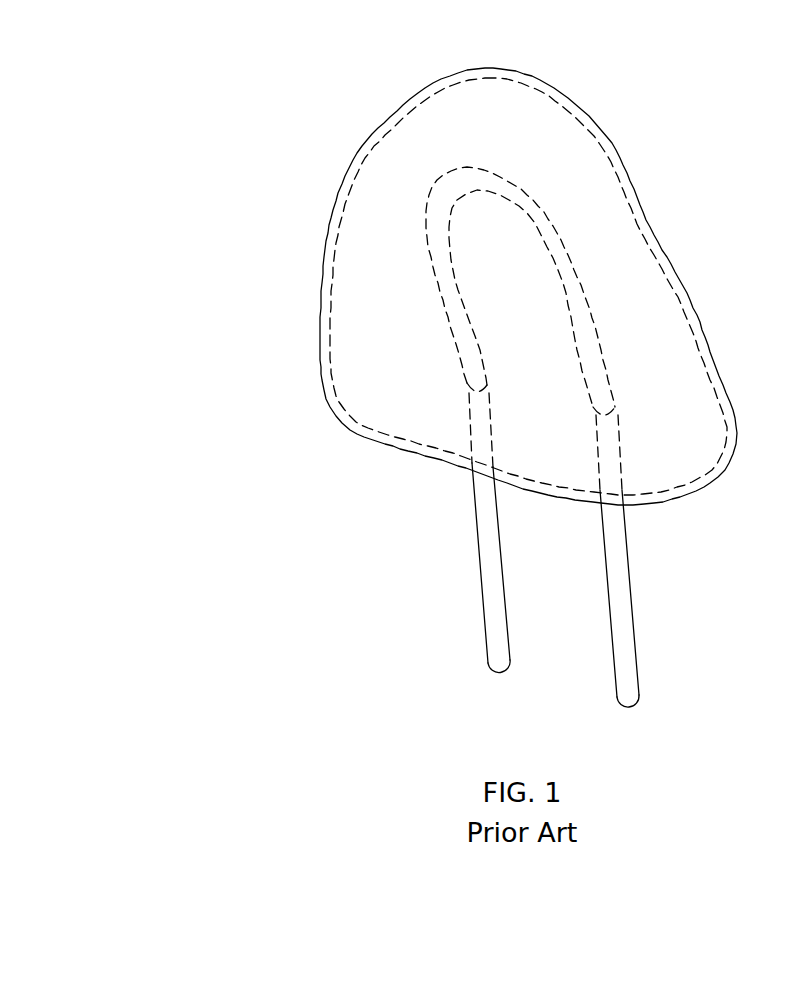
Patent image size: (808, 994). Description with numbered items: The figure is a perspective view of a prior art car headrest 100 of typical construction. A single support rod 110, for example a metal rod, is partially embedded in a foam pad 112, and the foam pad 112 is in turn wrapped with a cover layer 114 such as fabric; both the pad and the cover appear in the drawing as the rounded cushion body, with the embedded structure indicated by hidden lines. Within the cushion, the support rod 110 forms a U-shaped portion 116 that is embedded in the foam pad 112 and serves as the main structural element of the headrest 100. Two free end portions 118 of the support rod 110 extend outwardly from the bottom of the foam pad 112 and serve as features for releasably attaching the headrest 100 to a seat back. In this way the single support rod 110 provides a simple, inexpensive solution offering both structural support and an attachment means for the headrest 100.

The car headrest 100 is at (98, 80).
The support rod 110 is at (476, 530).
The foam pad 112 is at (333, 212).
The cover layer 114 is at (363, 148).
The U-shaped portion 116 is at (498, 161).
The free end portions 118 is at (479, 672).